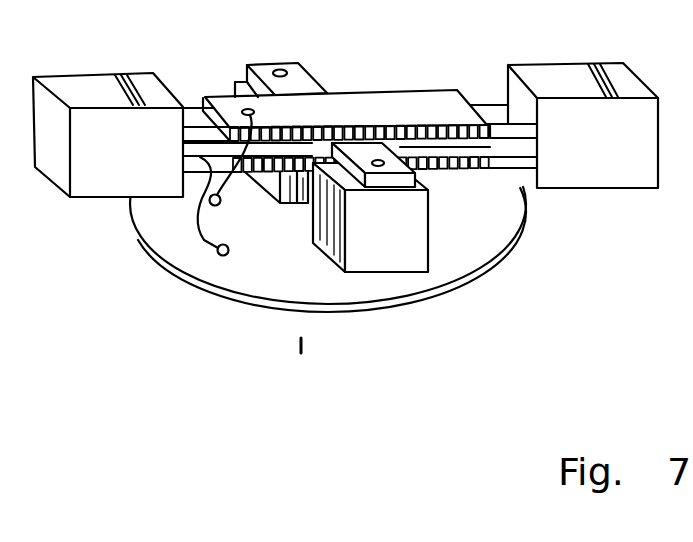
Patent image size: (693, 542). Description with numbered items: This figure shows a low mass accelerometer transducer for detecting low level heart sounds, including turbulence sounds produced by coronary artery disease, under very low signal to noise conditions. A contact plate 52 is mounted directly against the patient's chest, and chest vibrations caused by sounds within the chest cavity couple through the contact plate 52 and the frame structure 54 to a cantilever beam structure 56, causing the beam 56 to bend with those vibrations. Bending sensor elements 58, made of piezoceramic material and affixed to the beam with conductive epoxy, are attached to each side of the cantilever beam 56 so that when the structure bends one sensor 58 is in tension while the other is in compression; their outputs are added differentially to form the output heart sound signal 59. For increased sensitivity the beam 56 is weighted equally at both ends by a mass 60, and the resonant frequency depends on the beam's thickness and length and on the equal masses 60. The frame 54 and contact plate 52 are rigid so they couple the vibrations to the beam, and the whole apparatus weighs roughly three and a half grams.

The contact plate 52 is at (278, 280).
The frame structure 54 is at (233, 83).
The cantilever beam structure 56 is at (513, 147).
The bending sensor elements 58 is at (443, 163).
The electrical output signal 59 is at (232, 177).
The mass 60 is at (135, 177).